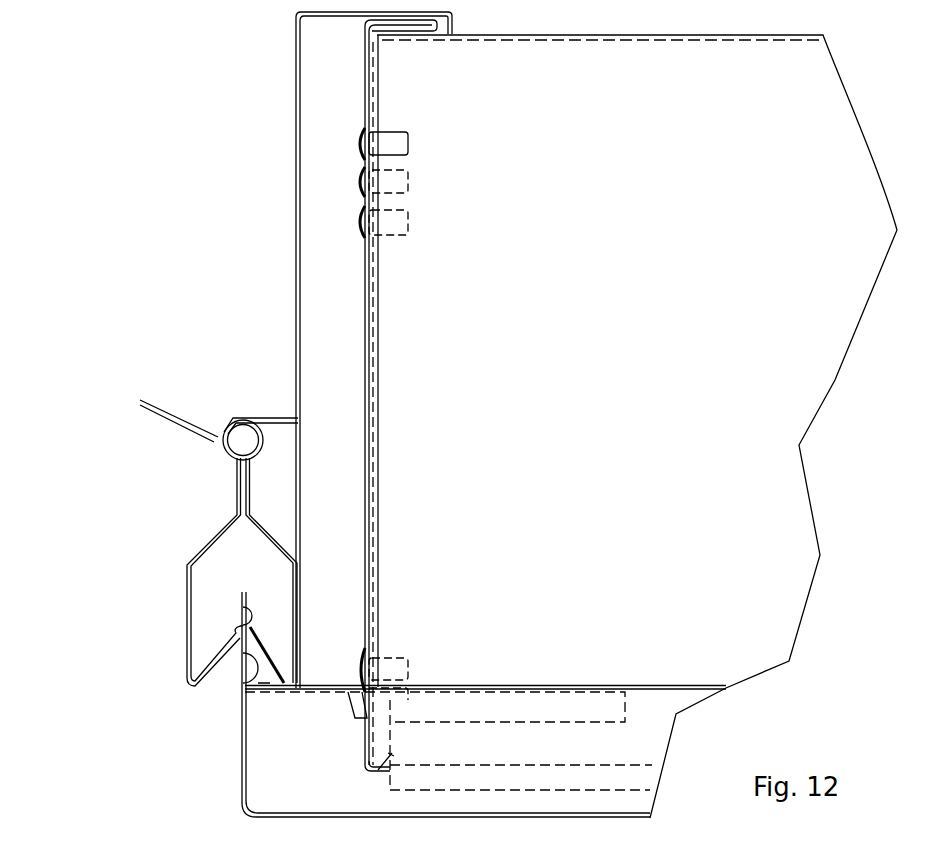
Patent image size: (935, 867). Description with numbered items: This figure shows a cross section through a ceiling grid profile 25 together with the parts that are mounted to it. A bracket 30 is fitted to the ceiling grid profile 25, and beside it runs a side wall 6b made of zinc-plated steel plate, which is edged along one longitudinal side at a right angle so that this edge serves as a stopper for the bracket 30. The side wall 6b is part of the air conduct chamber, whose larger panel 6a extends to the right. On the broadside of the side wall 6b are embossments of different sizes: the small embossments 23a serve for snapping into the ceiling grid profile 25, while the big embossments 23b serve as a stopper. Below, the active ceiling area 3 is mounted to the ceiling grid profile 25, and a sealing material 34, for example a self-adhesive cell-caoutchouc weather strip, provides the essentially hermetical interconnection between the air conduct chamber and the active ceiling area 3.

The active ceiling area 3 is at (240, 782).
The panel 6a is at (647, 479).
The side wall 6b is at (364, 93).
The small embossment 23a is at (240, 627).
The big embossment 23b is at (245, 683).
The ceiling grid profile 25 is at (233, 489).
The bracket 30 is at (295, 77).
The sealing material 34 is at (309, 795).